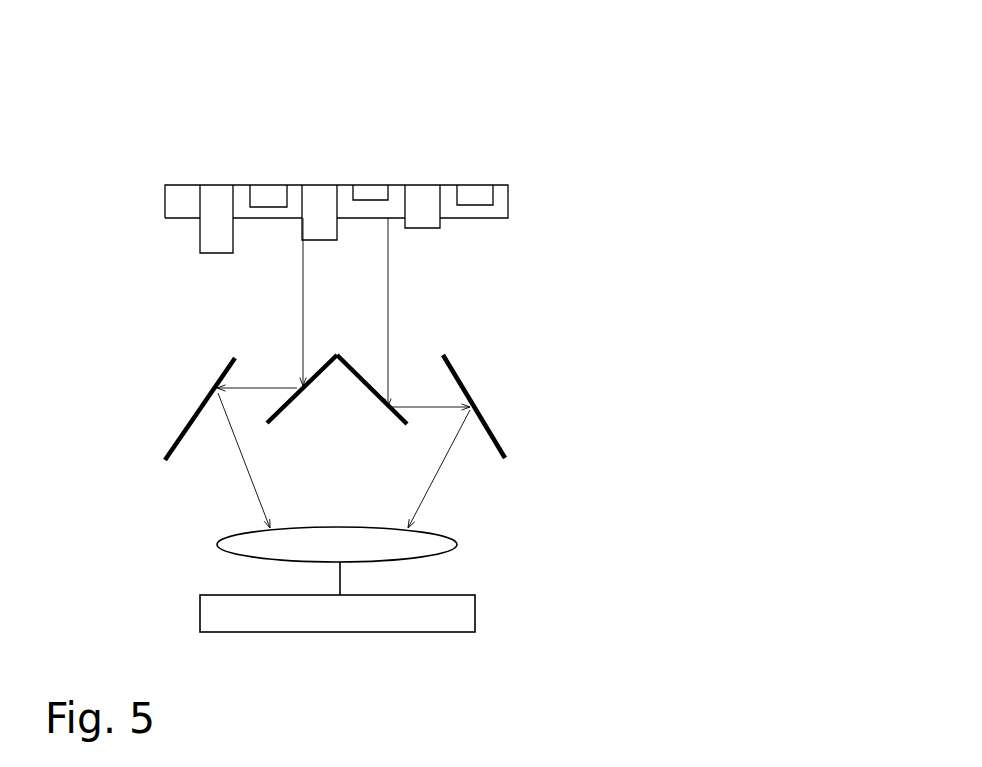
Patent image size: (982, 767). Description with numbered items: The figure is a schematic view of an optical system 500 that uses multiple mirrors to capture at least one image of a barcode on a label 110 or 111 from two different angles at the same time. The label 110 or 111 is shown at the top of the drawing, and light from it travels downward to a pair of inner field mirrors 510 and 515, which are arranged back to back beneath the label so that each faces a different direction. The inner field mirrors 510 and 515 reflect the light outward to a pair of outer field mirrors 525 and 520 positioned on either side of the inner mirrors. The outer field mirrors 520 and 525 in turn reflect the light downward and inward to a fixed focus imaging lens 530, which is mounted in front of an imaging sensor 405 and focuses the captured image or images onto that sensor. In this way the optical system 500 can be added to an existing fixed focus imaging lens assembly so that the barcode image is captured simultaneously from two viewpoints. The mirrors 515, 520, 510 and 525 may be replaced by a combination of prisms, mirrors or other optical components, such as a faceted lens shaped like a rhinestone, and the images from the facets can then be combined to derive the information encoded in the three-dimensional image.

The optical system 500 is at (55, 23).
The label 110 is at (513, 192).
The label 111 is at (336, 219).
The inner field mirror 510 is at (301, 378).
The inner field mirror 515 is at (364, 368).
The outer field mirror 525 is at (166, 436).
The outer field mirror 520 is at (494, 418).
The imaging lens 530 is at (457, 528).
The imaging sensor 405 is at (482, 602).